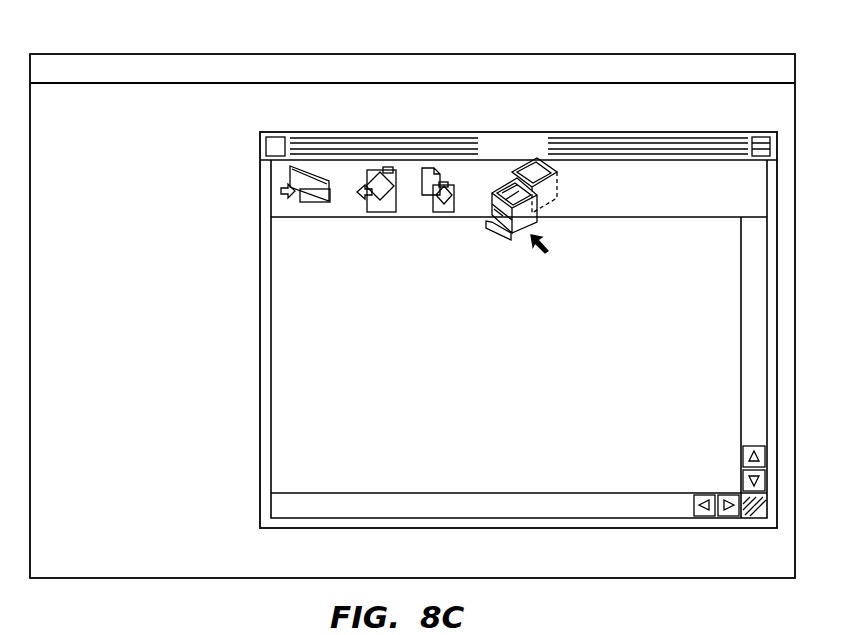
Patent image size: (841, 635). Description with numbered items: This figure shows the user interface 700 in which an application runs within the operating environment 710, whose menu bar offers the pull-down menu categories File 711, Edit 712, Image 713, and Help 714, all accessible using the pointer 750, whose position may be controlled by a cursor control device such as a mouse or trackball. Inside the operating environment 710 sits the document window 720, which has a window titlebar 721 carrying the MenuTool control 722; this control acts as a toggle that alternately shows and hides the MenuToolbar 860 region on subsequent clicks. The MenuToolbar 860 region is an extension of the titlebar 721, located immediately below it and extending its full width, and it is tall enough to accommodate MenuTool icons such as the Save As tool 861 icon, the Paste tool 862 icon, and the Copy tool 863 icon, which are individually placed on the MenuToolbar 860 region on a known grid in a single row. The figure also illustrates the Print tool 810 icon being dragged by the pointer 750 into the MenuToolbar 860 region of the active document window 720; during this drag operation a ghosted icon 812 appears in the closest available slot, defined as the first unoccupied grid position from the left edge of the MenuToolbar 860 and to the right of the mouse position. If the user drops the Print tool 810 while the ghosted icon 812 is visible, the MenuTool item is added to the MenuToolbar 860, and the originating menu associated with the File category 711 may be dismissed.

The user interface 700 is at (427, 42).
The operating environment 710 is at (112, 389).
The File menu category 711 is at (77, 62).
The Edit menu category 712 is at (129, 62).
The Image menu category 713 is at (197, 63).
The Help menu category 714 is at (252, 63).
The document window 720 is at (482, 403).
The window titlebar 721 is at (573, 131).
The MenuTool control 722 is at (276, 134).
The pointer 750 is at (552, 256).
The Print tool icon 810 is at (503, 240).
The ghosted icon 812 is at (562, 184).
The MenuToolbar region 860 is at (700, 219).
The Save As tool icon 861 is at (290, 168).
The Paste tool icon 862 is at (378, 168).
The Copy tool icon 863 is at (438, 166).